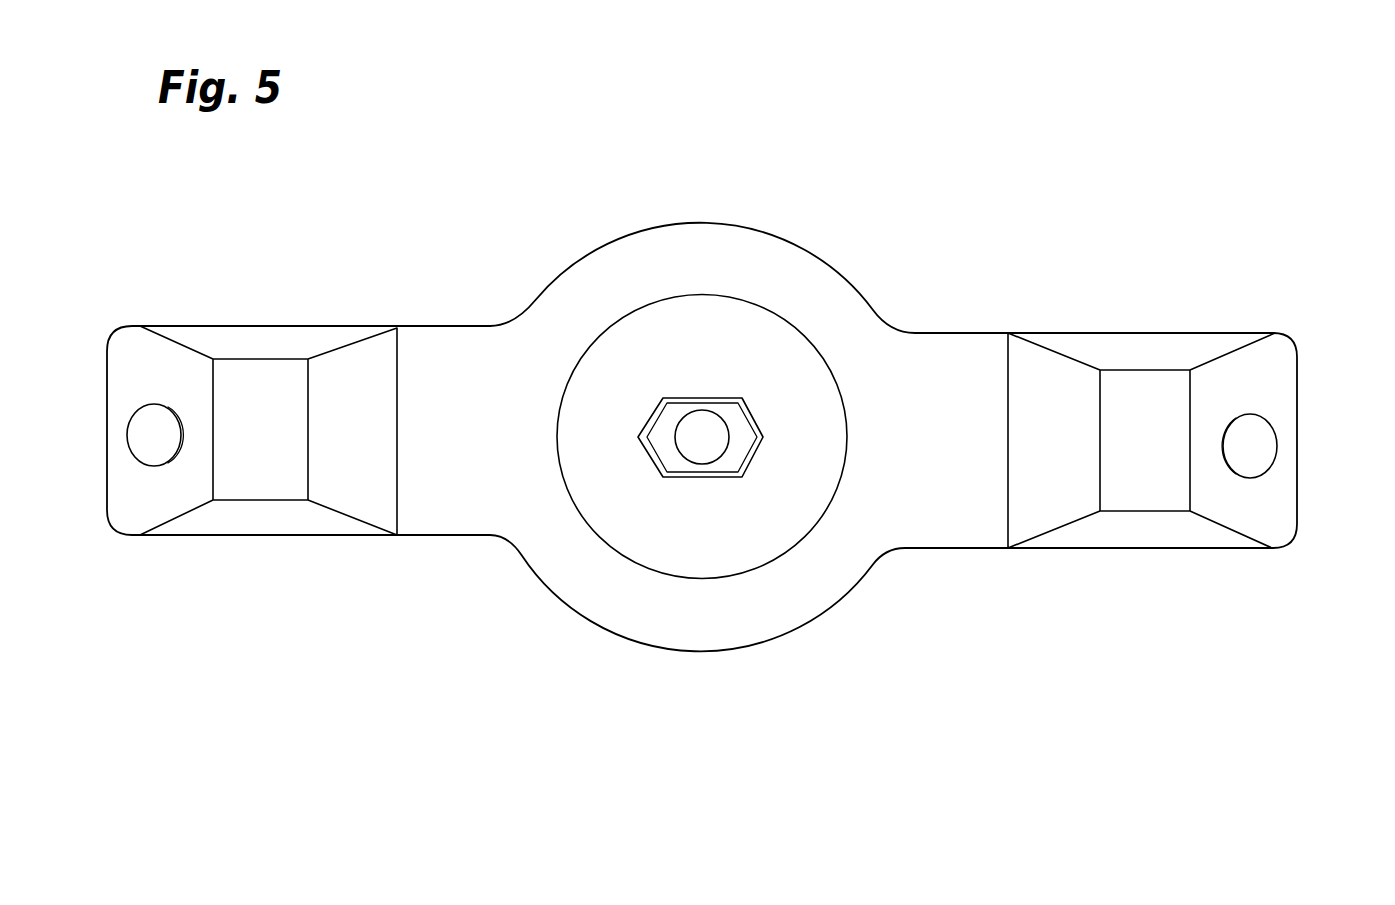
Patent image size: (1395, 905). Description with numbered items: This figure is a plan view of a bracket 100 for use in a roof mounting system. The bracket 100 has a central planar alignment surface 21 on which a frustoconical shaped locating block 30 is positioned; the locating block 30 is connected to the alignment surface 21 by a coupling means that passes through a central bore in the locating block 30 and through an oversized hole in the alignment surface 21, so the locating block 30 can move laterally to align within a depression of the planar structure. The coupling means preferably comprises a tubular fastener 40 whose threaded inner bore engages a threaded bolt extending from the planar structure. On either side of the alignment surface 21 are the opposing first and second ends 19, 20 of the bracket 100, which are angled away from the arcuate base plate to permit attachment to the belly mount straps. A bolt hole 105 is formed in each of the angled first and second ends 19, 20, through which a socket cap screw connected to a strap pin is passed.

The bracket 100 is at (977, 213).
The first end 19 is at (152, 537).
The second end 20 is at (1252, 549).
The central planar alignment surface 21 is at (902, 454).
The locating block 30 is at (705, 368).
The tubular fastener 40 is at (740, 453).
The bolt hole 105 is at (137, 448).